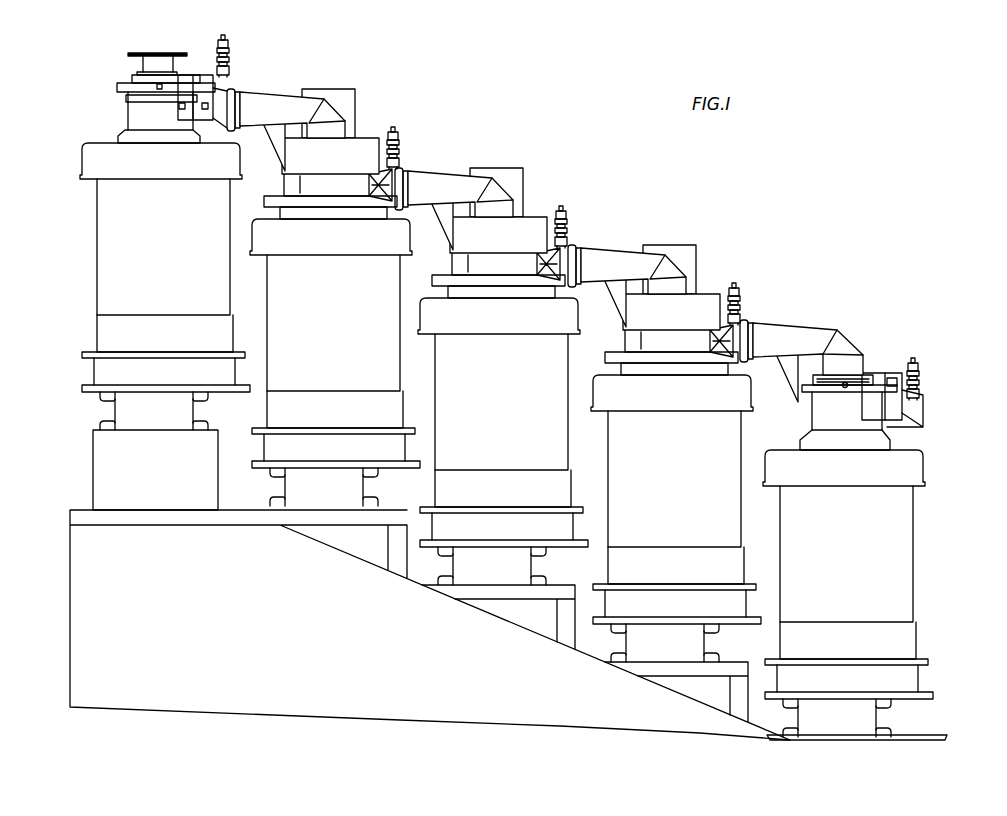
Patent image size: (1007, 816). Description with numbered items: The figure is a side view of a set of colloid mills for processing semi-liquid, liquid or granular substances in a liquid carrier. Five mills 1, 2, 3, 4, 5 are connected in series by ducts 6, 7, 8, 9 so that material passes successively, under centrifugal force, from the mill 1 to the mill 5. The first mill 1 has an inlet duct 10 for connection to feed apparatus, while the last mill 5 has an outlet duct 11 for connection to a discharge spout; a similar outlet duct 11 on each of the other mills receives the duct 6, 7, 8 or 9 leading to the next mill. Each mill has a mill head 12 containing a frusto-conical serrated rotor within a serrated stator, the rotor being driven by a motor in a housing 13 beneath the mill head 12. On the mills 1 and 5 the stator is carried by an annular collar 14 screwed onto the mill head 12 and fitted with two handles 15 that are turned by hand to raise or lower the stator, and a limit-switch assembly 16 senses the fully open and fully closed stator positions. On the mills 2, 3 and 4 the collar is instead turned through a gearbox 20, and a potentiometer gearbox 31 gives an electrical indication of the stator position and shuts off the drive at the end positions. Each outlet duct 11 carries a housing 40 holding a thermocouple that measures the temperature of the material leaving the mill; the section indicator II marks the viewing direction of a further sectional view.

The first mill 1 is at (86, 250).
The second mill 2 is at (378, 105).
The third mill 3 is at (543, 167).
The fourth mill 4 is at (712, 255).
The last mill 5 is at (922, 582).
The duct 6 is at (263, 103).
The duct 7 is at (432, 178).
The duct 8 is at (605, 254).
The duct 9 is at (790, 334).
The inlet duct 10 is at (134, 68).
The outlet duct 11 is at (570, 251).
The mill head 12 is at (475, 262).
The housing 13 is at (164, 250).
The annular collar 14 is at (464, 241).
The handles 15 is at (485, 237).
The limit-switch assembly 16 is at (504, 292).
The gearbox 20 is at (372, 135).
The potentiometer gearbox 31 is at (342, 85).
The housing 40 is at (230, 64).
The section line II is at (973, 538).